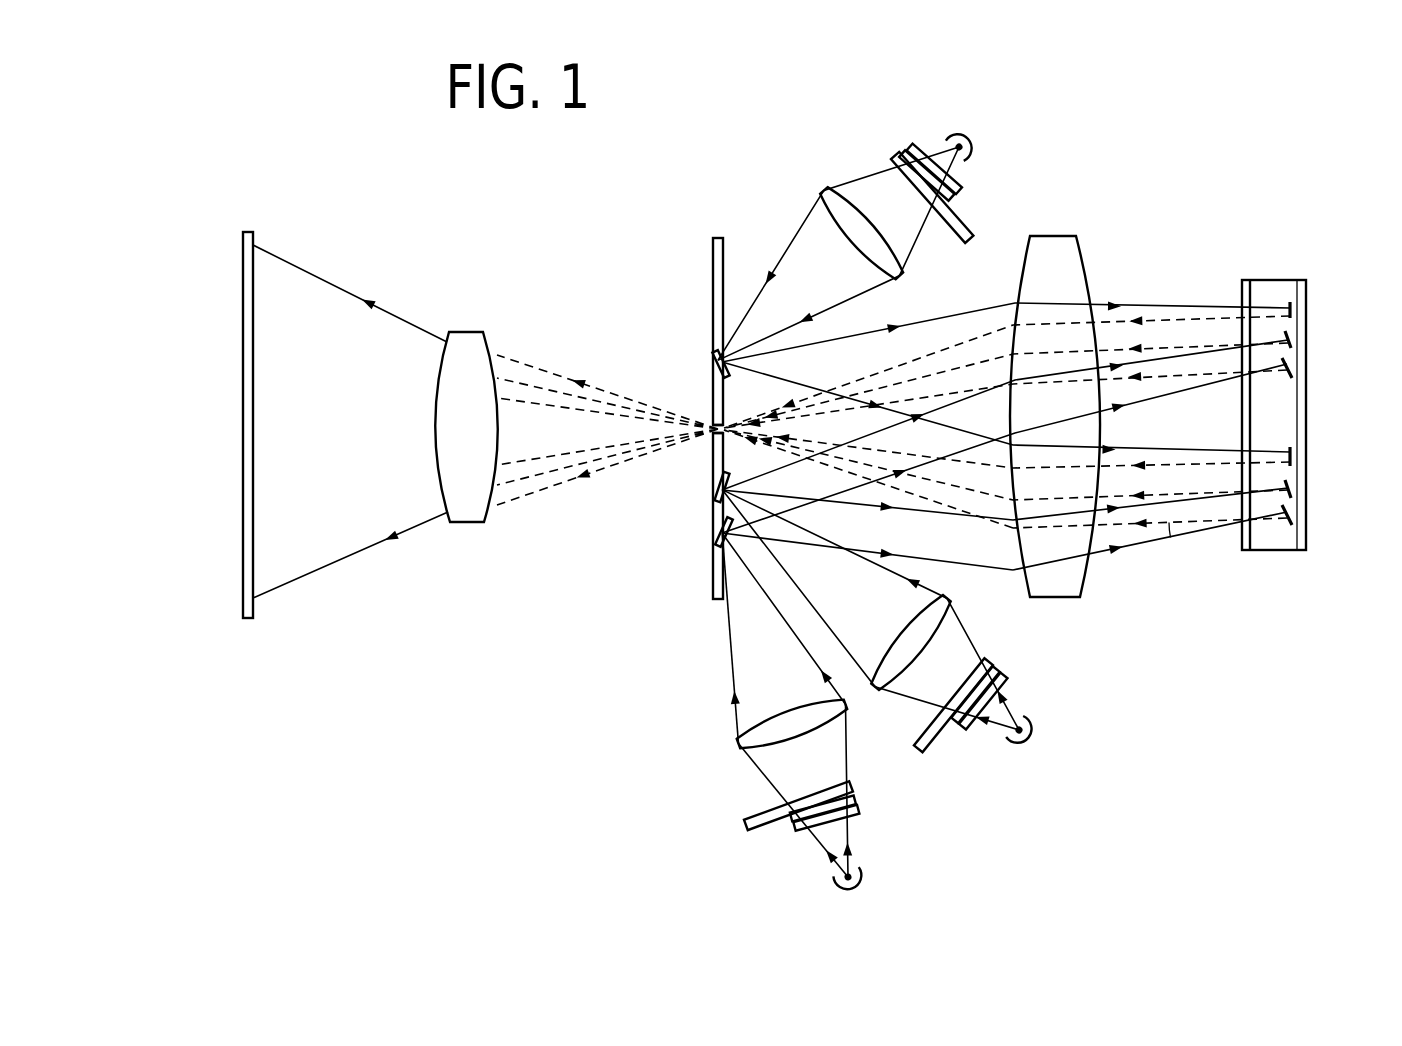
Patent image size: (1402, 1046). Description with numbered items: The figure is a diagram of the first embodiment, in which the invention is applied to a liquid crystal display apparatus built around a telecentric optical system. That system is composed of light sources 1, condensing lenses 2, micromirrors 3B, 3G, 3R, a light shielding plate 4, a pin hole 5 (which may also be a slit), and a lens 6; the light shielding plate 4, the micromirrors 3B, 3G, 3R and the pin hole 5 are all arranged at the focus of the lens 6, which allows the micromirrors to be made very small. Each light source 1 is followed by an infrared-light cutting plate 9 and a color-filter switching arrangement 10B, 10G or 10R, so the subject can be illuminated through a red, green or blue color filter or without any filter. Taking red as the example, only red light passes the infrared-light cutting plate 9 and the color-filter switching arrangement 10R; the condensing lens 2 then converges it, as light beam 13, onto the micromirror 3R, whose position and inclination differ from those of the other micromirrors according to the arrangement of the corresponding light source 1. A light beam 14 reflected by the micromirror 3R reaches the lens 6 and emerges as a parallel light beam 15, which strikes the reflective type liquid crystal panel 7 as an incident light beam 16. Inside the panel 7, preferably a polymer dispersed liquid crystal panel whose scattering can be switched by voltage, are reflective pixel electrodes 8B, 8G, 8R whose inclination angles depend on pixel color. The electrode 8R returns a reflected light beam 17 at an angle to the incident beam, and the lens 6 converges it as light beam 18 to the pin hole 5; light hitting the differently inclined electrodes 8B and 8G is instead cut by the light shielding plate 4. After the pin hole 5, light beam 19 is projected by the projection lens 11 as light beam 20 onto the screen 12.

The light source 1 is at (972, 140).
The condensing lens 2 is at (823, 200).
The micromirror 3B is at (716, 365).
The micromirror 3G is at (716, 490).
The micromirror 3R is at (716, 535).
The light shielding plate 4 is at (712, 298).
The pin hole 5 is at (706, 438).
The lens 6 is at (1078, 268).
The reflective type liquid crystal panel 7 is at (1265, 285).
The reflective pixel electrode 8B is at (1293, 318).
The reflective pixel electrode 8G is at (1293, 346).
The reflective pixel electrode 8R is at (1293, 371).
The infrared-light cutting plate 9 is at (920, 158).
The color-filter switching arrangement 10B is at (965, 222).
The color-filter switching arrangement 10G is at (938, 752).
The color-filter switching arrangement 10R is at (748, 833).
The projection lens 11 is at (470, 525).
The screen 12 is at (247, 620).
The light beam 13 is at (770, 782).
The light beam 14 is at (732, 665).
The parallel light beam 15 is at (985, 567).
The incident light beam 16 is at (1145, 543).
The reflected light beam 17 is at (1197, 523).
The light beam 18 is at (933, 501).
The light beam 19 is at (545, 362).
The light beam 20 is at (400, 318).